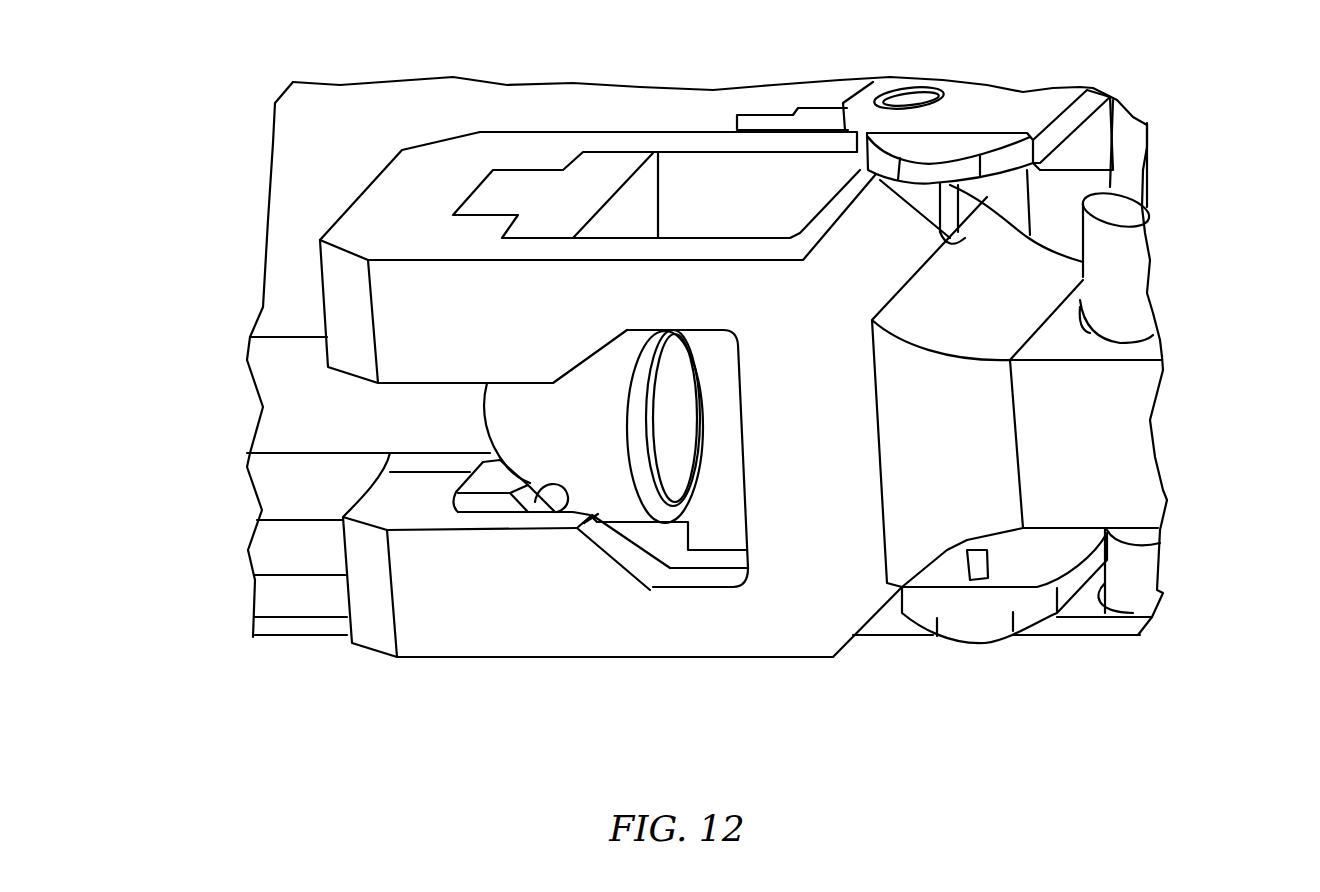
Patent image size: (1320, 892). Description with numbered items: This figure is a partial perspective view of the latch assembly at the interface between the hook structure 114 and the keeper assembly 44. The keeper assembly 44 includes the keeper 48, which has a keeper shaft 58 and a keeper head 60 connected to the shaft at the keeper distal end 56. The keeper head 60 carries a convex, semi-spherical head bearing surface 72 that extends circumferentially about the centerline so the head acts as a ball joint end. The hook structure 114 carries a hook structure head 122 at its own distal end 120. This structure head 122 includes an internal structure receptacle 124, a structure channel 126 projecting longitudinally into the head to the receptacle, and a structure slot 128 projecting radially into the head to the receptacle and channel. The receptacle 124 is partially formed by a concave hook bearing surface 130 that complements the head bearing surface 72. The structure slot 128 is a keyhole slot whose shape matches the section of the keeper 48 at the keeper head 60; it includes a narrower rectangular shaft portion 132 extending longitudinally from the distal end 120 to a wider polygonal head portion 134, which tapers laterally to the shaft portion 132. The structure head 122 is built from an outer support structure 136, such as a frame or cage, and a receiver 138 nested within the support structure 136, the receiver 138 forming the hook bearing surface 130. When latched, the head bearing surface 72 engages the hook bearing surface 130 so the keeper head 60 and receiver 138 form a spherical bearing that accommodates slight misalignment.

The keeper assembly 44 is at (203, 432).
The keeper 48 is at (231, 368).
The distal end 56 is at (693, 481).
The keeper shaft 58 is at (271, 328).
The keeper head 60 is at (712, 371).
The head bearing surface 72 is at (547, 437).
The hook structure 114 is at (1186, 380).
The distal end 120 is at (345, 596).
The hook structure head 122 is at (491, 119).
The structure receptacle 124 is at (710, 203).
The structure channel 126 is at (402, 488).
The structure slot 128 is at (638, 594).
The hook bearing surface 130 is at (556, 512).
The shaft portion 132 is at (417, 542).
The head portion 134 is at (714, 597).
The outer support structure 136 is at (410, 187).
The receiver 138 is at (596, 178).